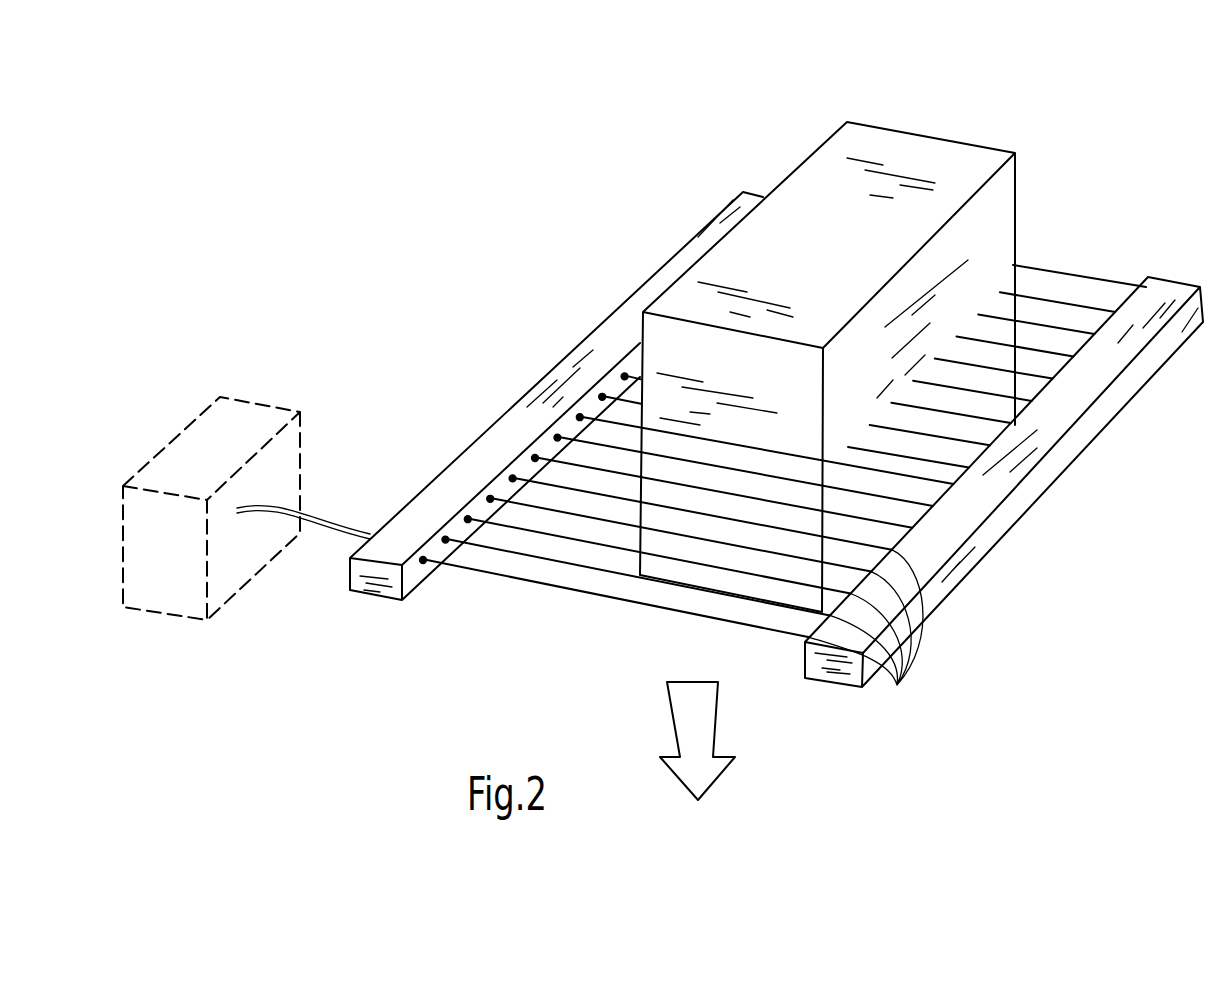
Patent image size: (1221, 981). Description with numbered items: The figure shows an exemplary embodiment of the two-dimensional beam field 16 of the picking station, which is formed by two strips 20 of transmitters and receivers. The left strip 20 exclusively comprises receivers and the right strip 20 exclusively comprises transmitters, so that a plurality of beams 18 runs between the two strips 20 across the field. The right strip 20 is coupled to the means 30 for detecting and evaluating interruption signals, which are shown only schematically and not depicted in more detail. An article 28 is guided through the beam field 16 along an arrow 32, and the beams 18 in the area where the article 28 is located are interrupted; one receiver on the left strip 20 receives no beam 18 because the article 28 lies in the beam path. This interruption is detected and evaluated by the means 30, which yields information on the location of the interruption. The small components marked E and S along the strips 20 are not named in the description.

The beam field 16 is at (537, 573).
The beam 18 is at (1077, 272).
The strip 20 is at (497, 417).
The article 28 is at (790, 165).
The means for detecting and evaluating interruption signals 30 is at (220, 436).
The arrow 32 is at (702, 732).
The electrode E is at (622, 374).
The wire convergence point S is at (866, 633).